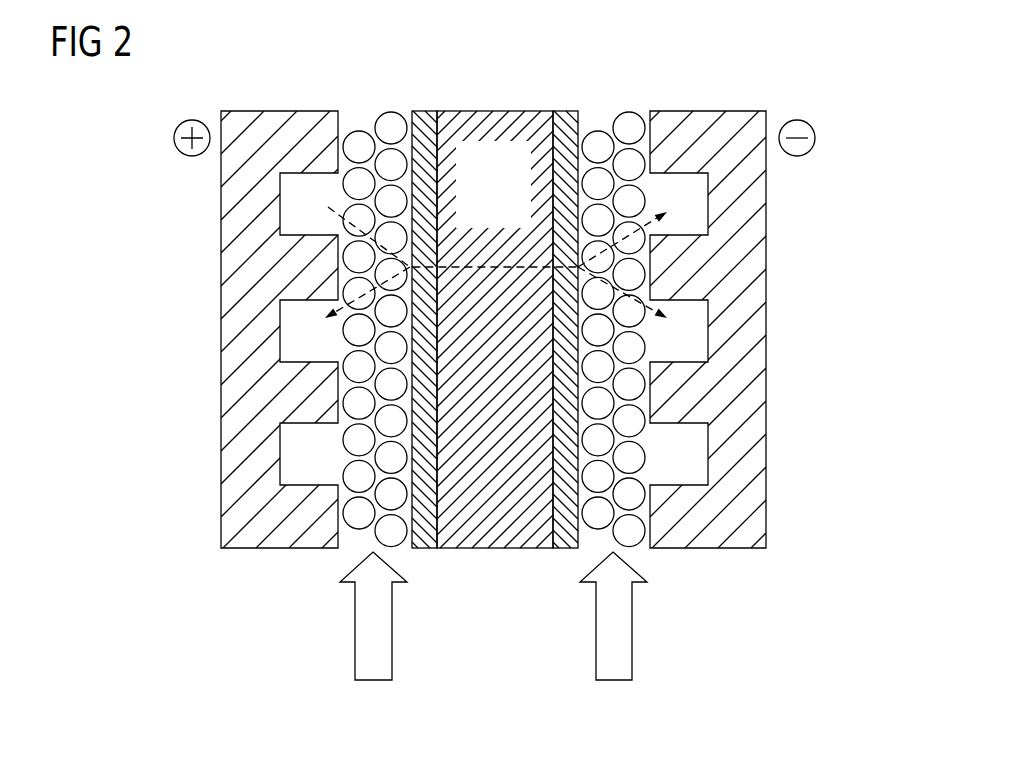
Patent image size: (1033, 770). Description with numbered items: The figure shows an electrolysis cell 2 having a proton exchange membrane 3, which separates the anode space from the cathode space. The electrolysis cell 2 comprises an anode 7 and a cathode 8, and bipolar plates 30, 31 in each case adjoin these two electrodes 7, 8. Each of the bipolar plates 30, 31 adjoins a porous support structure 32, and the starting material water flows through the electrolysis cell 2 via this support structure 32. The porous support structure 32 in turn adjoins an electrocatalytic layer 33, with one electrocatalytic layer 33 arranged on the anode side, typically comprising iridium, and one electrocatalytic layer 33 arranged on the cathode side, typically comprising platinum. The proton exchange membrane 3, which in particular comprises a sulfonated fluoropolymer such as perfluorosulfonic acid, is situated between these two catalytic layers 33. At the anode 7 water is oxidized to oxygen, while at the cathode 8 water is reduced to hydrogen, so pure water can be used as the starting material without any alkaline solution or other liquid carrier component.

The electrolysis cell 2 is at (865, 327).
The proton exchange membrane 3 is at (490, 130).
The anode 7 is at (174, 138).
The cathode 8 is at (816, 138).
The bipolar plate 30 is at (275, 128).
The bipolar plate 31 is at (705, 130).
The porous support structure 32 is at (355, 142).
The electrocatalytic layer 33 is at (420, 130).